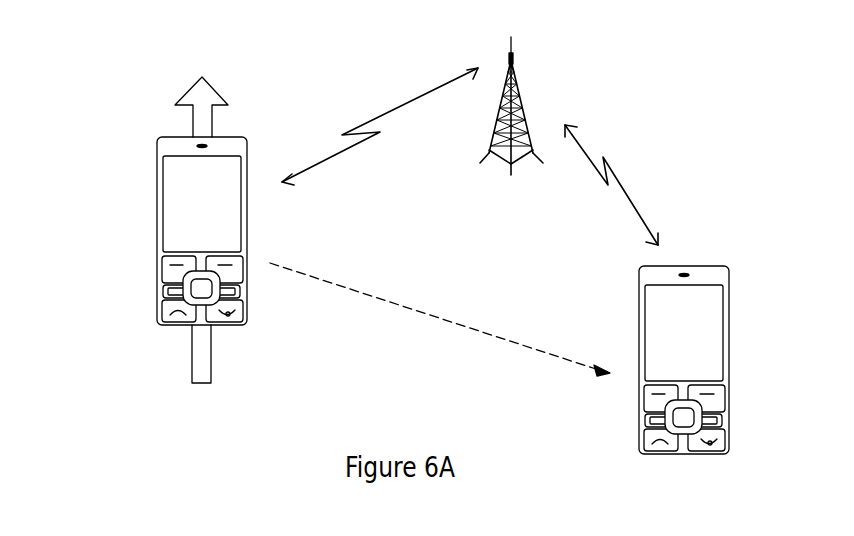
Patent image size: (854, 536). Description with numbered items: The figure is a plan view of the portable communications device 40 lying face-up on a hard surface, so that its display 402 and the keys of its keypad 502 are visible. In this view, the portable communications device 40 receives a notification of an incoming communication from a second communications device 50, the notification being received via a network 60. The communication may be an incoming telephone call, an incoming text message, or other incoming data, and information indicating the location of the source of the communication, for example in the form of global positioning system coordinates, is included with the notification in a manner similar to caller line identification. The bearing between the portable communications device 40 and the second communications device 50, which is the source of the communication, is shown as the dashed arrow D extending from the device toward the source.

The portable communications device 40 is at (180, 230).
The display 402 is at (192, 223).
The keypad 502 is at (241, 306).
The second communications device 50 is at (705, 266).
The network 60 is at (520, 87).
The dashed arrow D is at (480, 332).